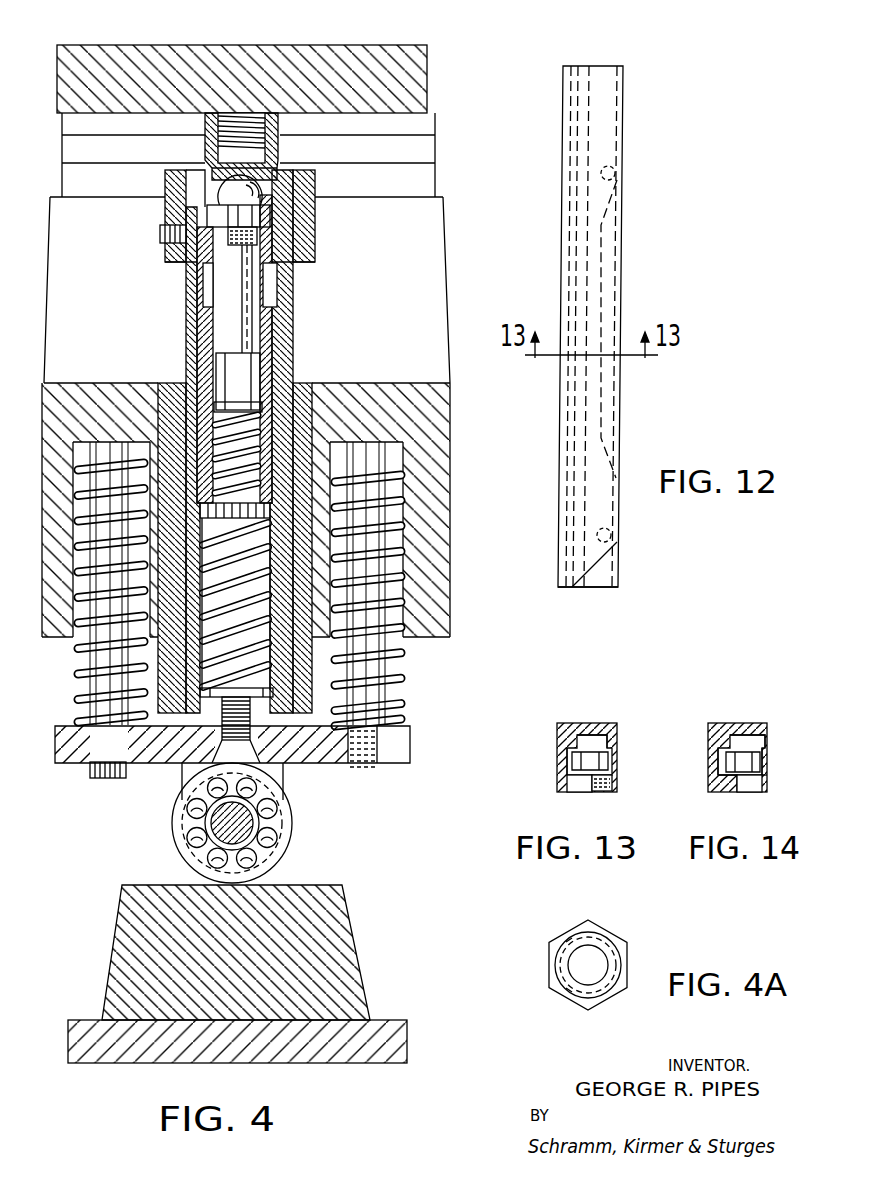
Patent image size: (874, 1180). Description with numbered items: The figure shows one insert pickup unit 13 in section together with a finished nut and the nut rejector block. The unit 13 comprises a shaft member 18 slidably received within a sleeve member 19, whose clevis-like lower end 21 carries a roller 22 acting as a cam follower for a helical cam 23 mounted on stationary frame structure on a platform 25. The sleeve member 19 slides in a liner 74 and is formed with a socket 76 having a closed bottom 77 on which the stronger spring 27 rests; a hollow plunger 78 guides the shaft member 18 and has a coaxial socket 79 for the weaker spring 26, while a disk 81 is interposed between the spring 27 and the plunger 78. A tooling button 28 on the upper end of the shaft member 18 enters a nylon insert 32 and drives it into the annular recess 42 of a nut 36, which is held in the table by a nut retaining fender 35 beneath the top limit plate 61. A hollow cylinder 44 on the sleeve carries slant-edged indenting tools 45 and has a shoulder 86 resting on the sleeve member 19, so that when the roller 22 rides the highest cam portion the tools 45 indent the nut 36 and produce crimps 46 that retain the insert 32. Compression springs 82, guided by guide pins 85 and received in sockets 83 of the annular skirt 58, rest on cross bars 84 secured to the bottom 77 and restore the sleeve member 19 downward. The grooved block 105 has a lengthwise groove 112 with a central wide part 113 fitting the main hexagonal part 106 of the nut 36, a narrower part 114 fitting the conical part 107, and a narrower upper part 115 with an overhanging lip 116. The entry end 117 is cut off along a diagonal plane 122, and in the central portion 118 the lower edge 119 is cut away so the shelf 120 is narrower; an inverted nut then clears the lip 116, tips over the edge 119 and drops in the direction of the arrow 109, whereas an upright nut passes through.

In FIG. 4, the top limit plate 61 is at (372, 46).
In FIG. 4, the nut retaining fender 35 is at (412, 150).
In FIG. 4, the nut 36 is at (207, 122).
In FIG. 13, the nut 36 is at (626, 745).
In FIG. 4A, the nut 36 is at (613, 931).
In FIG. 4, the annular recess 42 is at (207, 150).
In FIG. 4, the nylon insert 32 is at (288, 165).
In FIG. 4, the tooling button 28 is at (243, 192).
In FIG. 4, the shoulder 86 is at (272, 190).
In FIG. 4, the indenting tool 45 is at (178, 186).
In FIG. 4, the hollow cylinder 44 is at (173, 222).
In FIG. 4, the crimp 46 is at (203, 166).
In FIG. 4A, the crimp 46 is at (622, 963).
In FIG. 4, the insert pickup unit 13 is at (249, 441).
In FIG. 4, the hollow plunger 78 is at (208, 342).
In FIG. 4, the socket 76 is at (205, 283).
In FIG. 4, the sleeve member 19 is at (290, 345).
In FIG. 4, the shaft member 18 is at (236, 320).
In FIG. 4, the coaxial socket 79 is at (262, 378).
In FIG. 4, the liner 74 is at (173, 382).
In FIG. 4, the disk 81 is at (300, 478).
In FIG. 4, the spring 26 is at (262, 440).
In FIG. 4, the annular skirt 58 is at (447, 512).
In FIG. 4, the socket 83 is at (90, 456).
In FIG. 4, the compression spring 82 is at (80, 650).
In FIG. 4, the guide pin 85 is at (88, 690).
In FIG. 4, the cross bar 84 is at (405, 753).
In FIG. 4, the closed bottom 77 is at (305, 740).
In FIG. 4, the spring 27 is at (196, 720).
In FIG. 4, the clevis-like lower end 21 is at (283, 781).
In FIG. 4, the roller 22 is at (292, 829).
In FIG. 4, the helical cam 23 is at (328, 885).
In FIG. 4, the platform 25 is at (386, 1020).
In FIG. 12, the grooved block 105 is at (562, 240).
In FIG. 13, the grooved block 105 is at (575, 723).
In FIG. 14, the grooved block 105 is at (722, 723).
In FIG. 12, the central portion 118 is at (607, 310).
In FIG. 12, the diagonal plane 122 is at (600, 565).
In FIG. 12, the entry end 117 is at (585, 590).
In FIG. 13, the narrower part 115 is at (598, 740).
In FIG. 14, the narrower part 115 is at (745, 745).
In FIG. 13, the lengthwise groove 112 is at (570, 757).
In FIG. 13, the narrower part 114 is at (572, 778).
In FIG. 13, the conical part 107 is at (600, 770).
In FIG. 14, the central wide part 113 is at (718, 760).
In FIG. 14, the overhanging lip 116 is at (765, 740).
In FIG. 14, the main hexagonal part 106 is at (773, 767).
In FIG. 14, the shelf 120 is at (730, 790).
In FIG. 14, the lower edge 119 is at (742, 790).
In FIG. 14, the arrow 109 is at (773, 792).